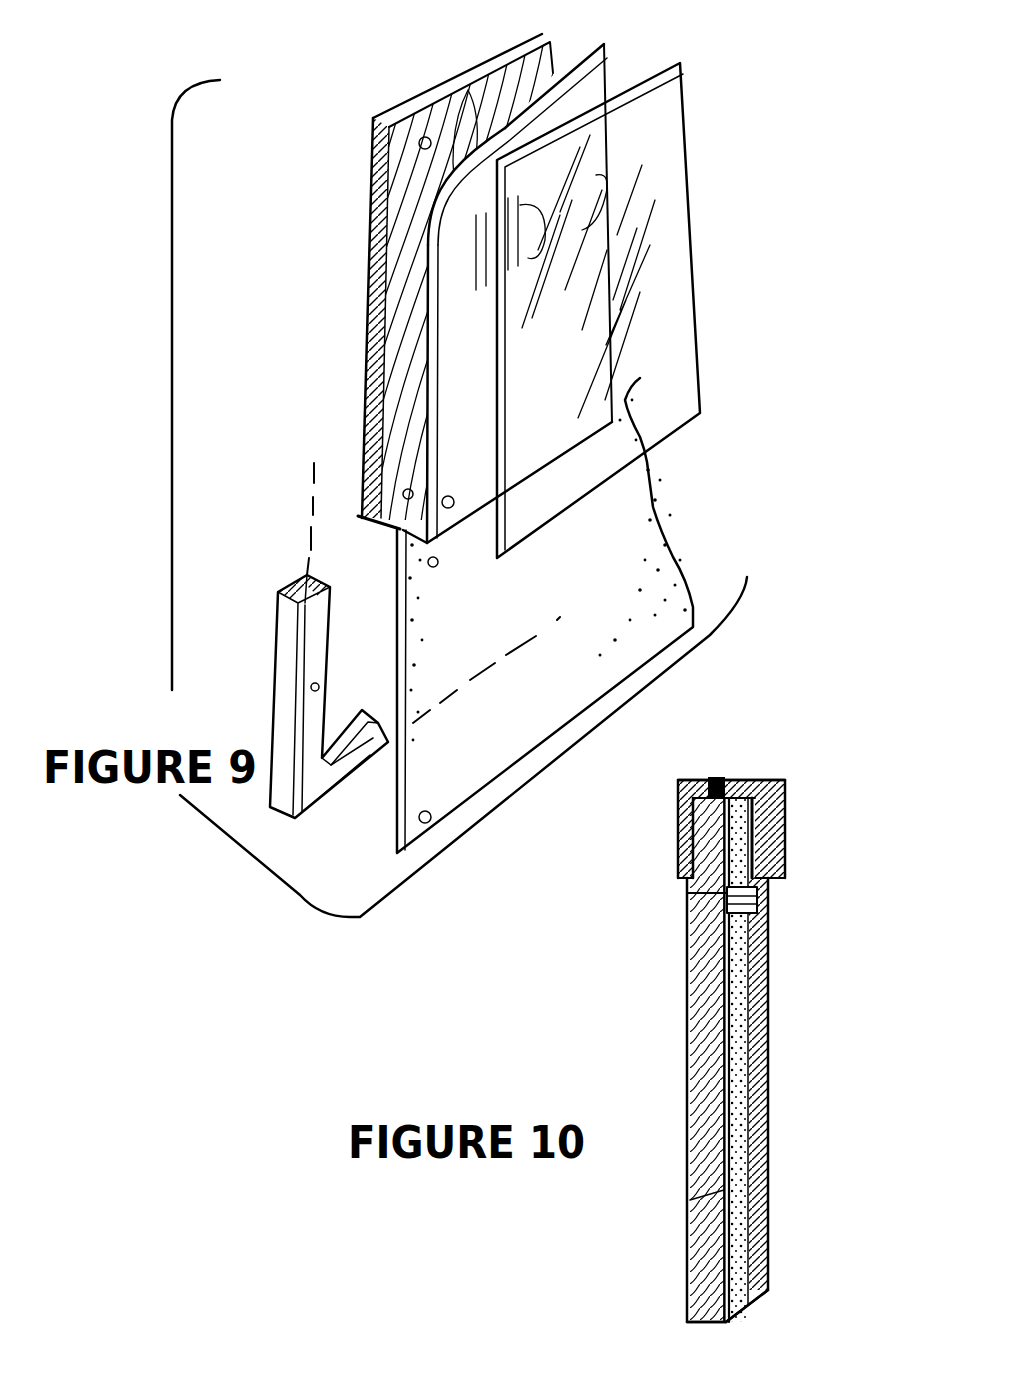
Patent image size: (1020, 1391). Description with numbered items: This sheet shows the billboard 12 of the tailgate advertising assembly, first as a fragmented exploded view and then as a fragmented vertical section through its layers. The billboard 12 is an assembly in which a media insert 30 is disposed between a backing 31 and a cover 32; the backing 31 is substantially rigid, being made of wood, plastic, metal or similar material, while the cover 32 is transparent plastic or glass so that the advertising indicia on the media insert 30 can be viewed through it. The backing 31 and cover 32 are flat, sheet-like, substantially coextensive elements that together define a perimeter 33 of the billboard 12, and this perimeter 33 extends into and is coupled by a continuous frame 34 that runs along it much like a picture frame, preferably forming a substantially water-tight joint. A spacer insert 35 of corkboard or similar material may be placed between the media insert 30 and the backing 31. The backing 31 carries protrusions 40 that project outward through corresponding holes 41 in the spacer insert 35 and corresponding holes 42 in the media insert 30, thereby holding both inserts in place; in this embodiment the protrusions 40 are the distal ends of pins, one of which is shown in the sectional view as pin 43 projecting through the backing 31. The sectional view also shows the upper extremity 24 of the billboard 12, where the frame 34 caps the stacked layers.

In FIG. 9, the billboard 12 is at (266, 534).
In FIG. 10, the billboard 12 is at (670, 997).
In FIG. 10, the upper extremity 24 is at (745, 780).
In FIG. 9, the media insert 30 is at (480, 492).
In FIG. 10, the media insert 30 is at (768, 1150).
In FIG. 9, the backing 31 is at (433, 593).
In FIG. 10, the backing 31 is at (687, 1200).
In FIG. 9, the cover 32 is at (637, 330).
In FIG. 10, the cover 32 is at (768, 1108).
In FIG. 9, the perimeter 33 is at (365, 393).
In FIG. 10, the perimeter 33 is at (725, 780).
In FIG. 9, the frame 34 is at (295, 674).
In FIG. 10, the frame 34 is at (790, 814).
In FIG. 10, the spacer insert 35 is at (727, 1322).
In FIG. 9, the protrusions 40 is at (373, 198).
In FIG. 10, the protrusions 40 is at (687, 937).
In FIG. 9, the holes 41 is at (433, 567).
In FIG. 10, the holes 41 is at (680, 870).
In FIG. 9, the holes 42 is at (607, 77).
In FIG. 10, the holes 42 is at (757, 900).
In FIG. 10, the pin 43 is at (690, 910).